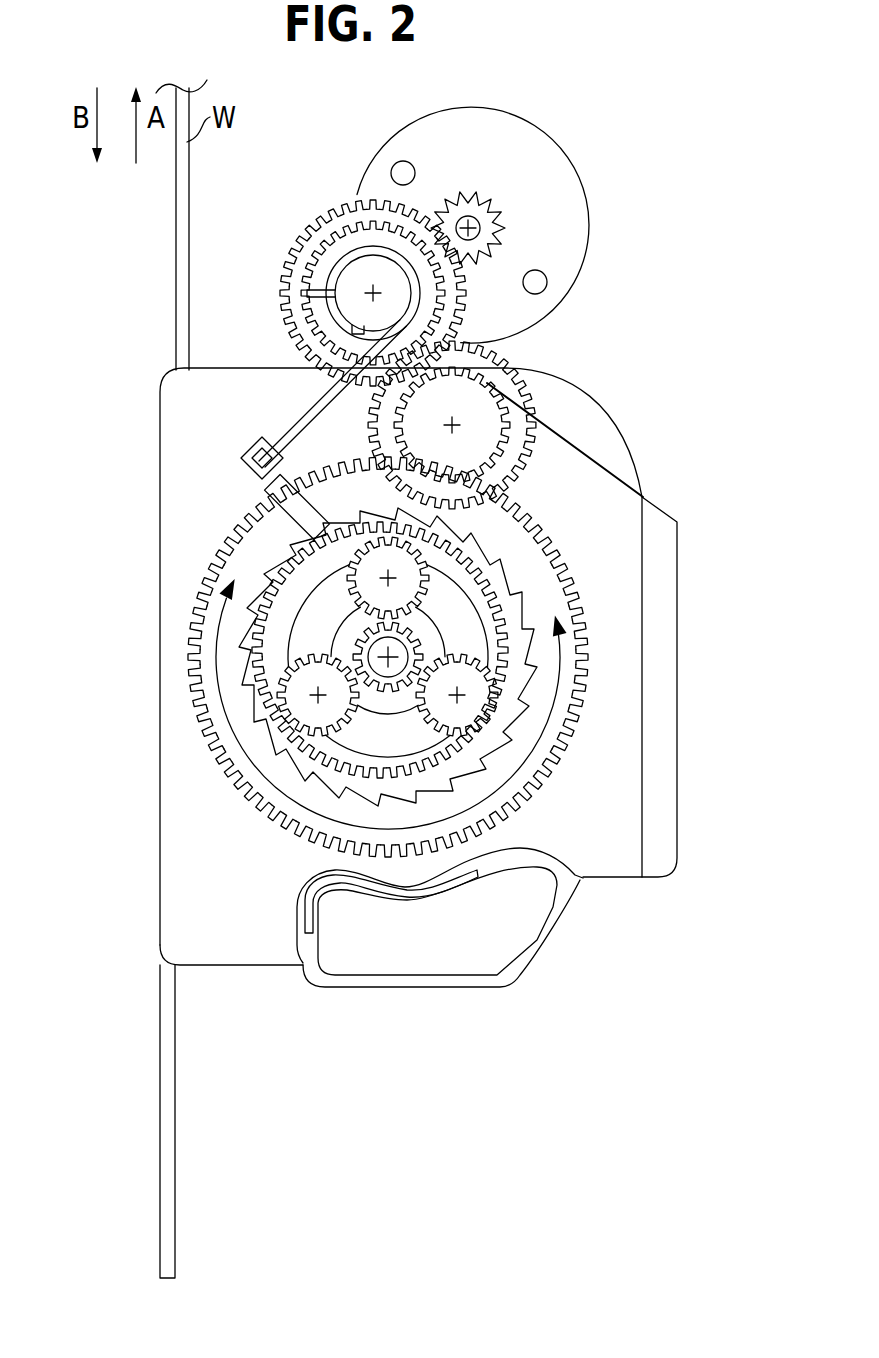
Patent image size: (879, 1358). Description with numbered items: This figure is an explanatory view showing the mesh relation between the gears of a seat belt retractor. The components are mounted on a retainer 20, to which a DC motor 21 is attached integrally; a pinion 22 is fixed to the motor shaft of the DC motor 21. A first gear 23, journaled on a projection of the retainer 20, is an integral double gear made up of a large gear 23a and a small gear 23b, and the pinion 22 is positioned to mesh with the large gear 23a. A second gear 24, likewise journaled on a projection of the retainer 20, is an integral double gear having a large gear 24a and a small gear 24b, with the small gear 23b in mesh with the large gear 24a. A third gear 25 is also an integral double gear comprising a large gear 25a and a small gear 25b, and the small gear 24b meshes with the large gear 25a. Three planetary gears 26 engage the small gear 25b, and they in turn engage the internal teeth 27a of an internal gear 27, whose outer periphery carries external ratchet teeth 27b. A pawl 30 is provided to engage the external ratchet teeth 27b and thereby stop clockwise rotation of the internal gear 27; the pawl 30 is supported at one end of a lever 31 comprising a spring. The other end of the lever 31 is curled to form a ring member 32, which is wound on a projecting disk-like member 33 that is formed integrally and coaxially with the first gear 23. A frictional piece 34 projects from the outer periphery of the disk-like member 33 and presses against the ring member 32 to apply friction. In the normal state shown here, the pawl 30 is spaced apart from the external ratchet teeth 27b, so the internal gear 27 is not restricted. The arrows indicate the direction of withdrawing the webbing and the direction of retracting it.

The retainer 20 is at (238, 938).
The DC motor 21 is at (588, 207).
The pinion 22 is at (498, 237).
The first gear 23 is at (503, 297).
The large gear 23a is at (463, 273).
The small gear 23b is at (457, 328).
The second gear 24 is at (577, 413).
The large gear 24a is at (527, 373).
The small gear 24b is at (503, 445).
The third gear 25 is at (623, 570).
The large gear 25a is at (440, 634).
The small gear 25b is at (432, 640).
The planetary gears 26 is at (482, 702).
The internal gear 27 is at (478, 758).
The internal teeth 27a is at (508, 775).
The external ratchet teeth 27b is at (487, 817).
The pawl 30 is at (257, 440).
The lever 31 is at (303, 420).
The ring member 32 is at (368, 245).
The disk-like member 33 is at (350, 283).
The frictional piece 34 is at (307, 294).